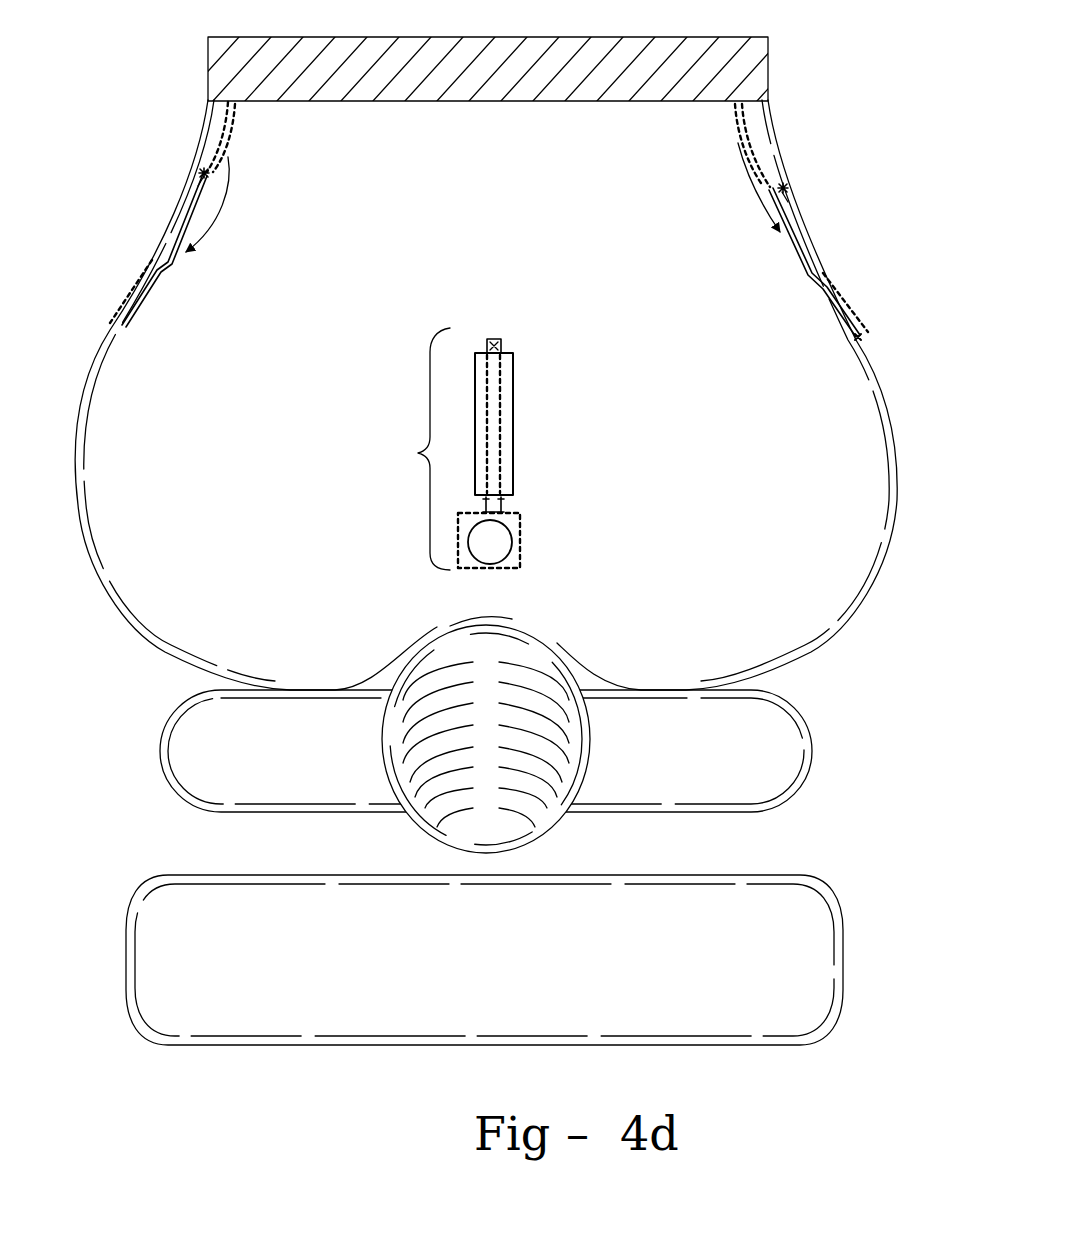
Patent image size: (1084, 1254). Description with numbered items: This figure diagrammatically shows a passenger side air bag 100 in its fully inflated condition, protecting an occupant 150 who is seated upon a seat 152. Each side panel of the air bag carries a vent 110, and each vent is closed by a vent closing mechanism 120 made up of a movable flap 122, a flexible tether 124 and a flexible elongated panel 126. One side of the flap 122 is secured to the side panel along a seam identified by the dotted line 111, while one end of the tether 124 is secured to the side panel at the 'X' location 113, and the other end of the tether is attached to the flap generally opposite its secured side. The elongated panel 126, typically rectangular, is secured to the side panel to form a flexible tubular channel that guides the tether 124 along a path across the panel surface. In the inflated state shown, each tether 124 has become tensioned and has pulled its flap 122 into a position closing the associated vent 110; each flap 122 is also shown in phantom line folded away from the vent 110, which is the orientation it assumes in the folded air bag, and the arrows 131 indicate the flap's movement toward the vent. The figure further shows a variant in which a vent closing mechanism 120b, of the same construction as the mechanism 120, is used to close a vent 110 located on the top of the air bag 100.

The air bag 100 is at (866, 607).
The vent 110 is at (200, 179).
The dotted line 111 is at (204, 170).
The location 113 is at (858, 337).
The vent closing mechanism 120 is at (493, 543).
The vent closing mechanism 120b is at (403, 449).
The movable flap 122 is at (230, 143).
The flexible tether 124 is at (140, 278).
The flexible elongated panel 126 is at (516, 383).
The arrows 131 is at (224, 218).
The occupant 150 is at (196, 750).
The seat 152 is at (166, 944).